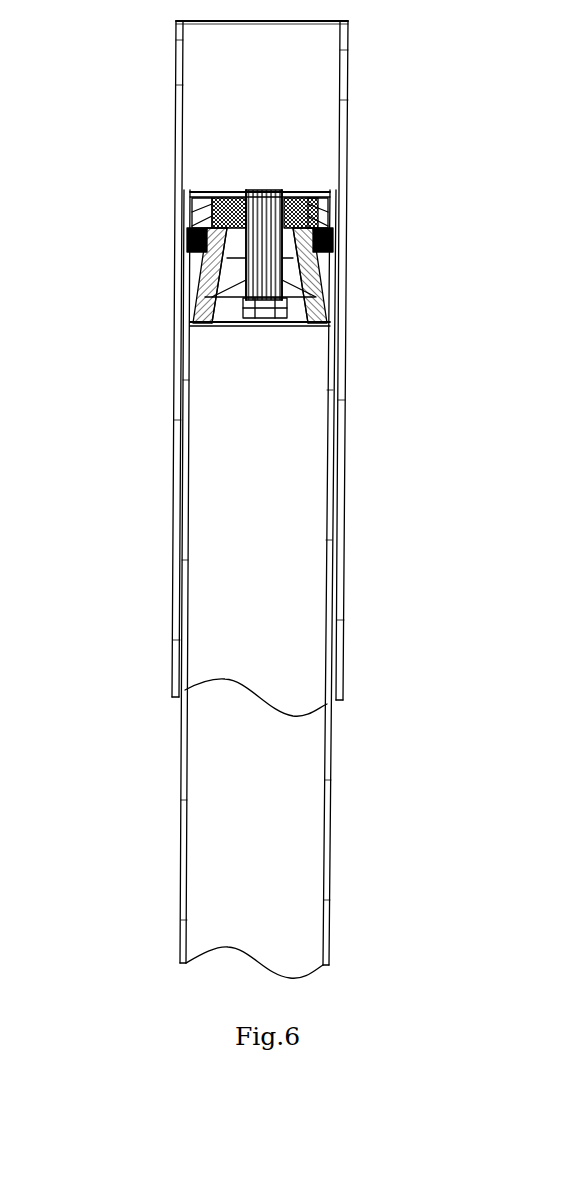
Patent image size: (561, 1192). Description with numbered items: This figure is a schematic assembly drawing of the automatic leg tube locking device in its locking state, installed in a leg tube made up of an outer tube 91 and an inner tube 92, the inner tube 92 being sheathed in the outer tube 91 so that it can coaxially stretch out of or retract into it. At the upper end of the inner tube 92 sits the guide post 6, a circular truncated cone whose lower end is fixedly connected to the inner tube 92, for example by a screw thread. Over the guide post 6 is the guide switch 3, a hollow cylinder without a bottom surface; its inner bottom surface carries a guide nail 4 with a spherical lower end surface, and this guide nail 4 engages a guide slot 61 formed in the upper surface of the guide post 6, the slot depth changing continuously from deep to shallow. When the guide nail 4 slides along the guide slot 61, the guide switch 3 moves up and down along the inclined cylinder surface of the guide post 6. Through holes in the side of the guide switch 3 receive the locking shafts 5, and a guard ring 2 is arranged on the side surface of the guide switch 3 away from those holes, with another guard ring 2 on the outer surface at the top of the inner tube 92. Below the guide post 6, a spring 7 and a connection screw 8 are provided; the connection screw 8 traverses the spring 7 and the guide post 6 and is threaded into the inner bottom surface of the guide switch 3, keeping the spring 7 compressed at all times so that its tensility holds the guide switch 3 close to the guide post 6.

The outer tube 91 is at (345, 133).
The inner tube 92 is at (348, 438).
The guard ring 2 is at (332, 215).
The guide switch 3 is at (318, 222).
The guide nail 4 is at (255, 192).
The locking shaft 5 is at (186, 253).
The guide post 6 is at (345, 275).
The guide slot 61 is at (205, 222).
The spring 7 is at (242, 278).
The connection screw 8 is at (235, 305).